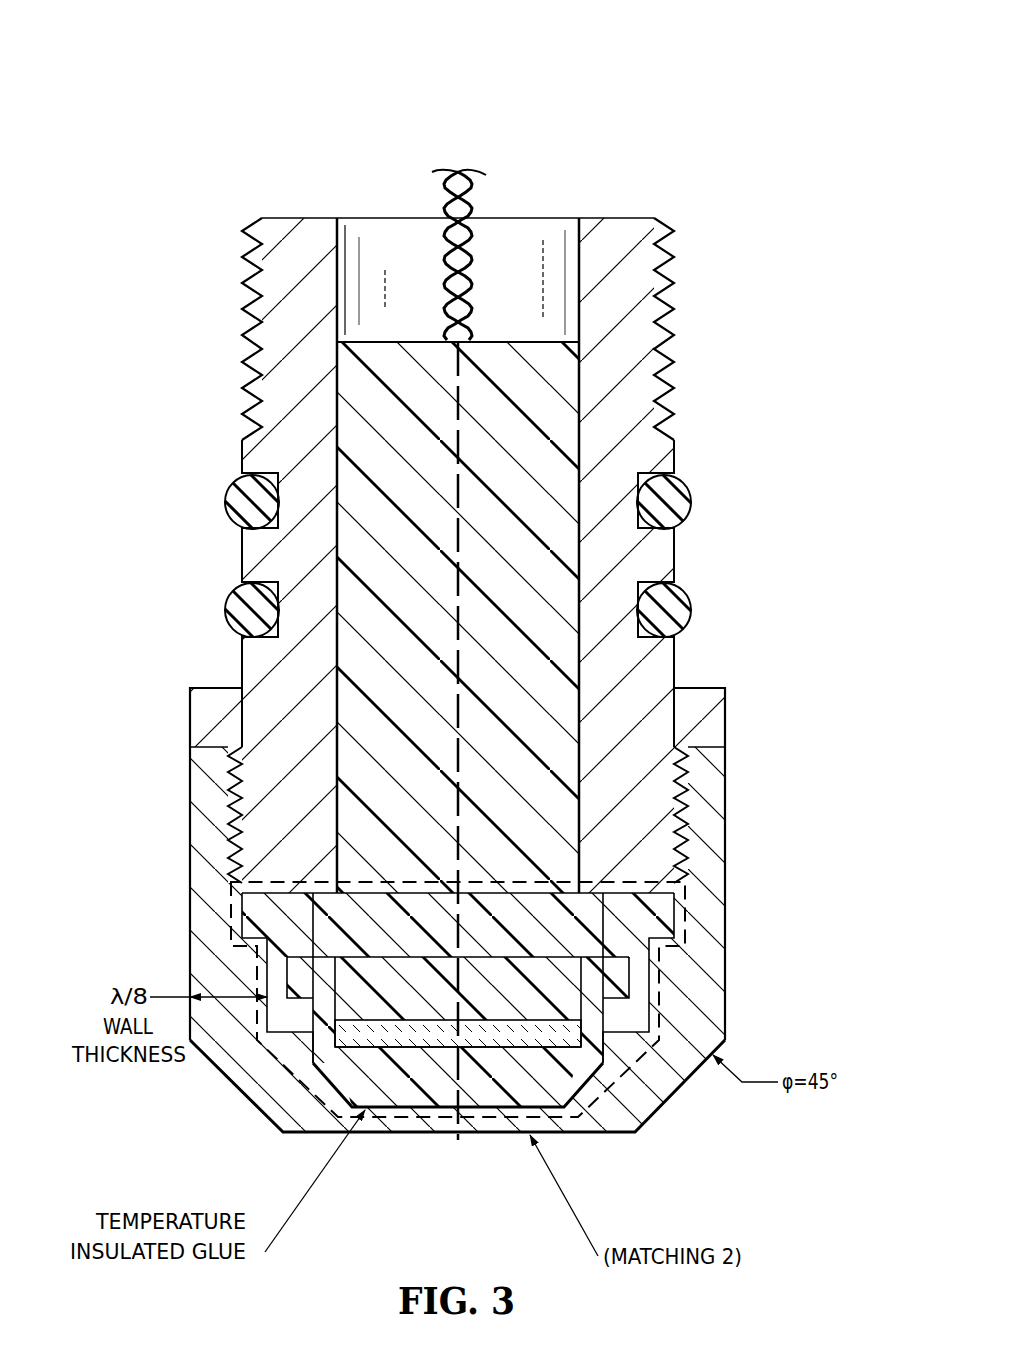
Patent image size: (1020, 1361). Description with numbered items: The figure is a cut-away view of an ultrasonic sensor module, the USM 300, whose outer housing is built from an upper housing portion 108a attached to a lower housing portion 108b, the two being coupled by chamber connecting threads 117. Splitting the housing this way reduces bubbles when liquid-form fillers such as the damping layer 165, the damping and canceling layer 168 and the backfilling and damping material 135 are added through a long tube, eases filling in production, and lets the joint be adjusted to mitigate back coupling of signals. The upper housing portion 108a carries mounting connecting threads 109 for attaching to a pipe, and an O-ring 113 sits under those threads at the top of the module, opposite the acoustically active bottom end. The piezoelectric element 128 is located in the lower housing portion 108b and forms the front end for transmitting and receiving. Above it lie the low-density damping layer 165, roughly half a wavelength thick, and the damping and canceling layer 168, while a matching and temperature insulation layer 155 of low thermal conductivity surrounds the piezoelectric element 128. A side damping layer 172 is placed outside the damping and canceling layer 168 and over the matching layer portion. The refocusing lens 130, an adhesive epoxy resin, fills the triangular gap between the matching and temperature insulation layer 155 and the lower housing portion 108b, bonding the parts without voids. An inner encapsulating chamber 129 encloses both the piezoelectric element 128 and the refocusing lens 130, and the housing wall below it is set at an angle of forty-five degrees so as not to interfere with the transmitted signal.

The USM 300 is at (196, 96).
The backfilling and damping material 135 is at (410, 440).
The upper housing portion 108a is at (623, 222).
The mounting connecting threads 109 is at (238, 270).
The O-ring 113 is at (690, 508).
The chamber connecting threads 117 is at (238, 797).
The lower housing portion 108b is at (190, 822).
The damping layer 165 is at (383, 987).
The damping and canceling layer 168 is at (497, 900).
The side damping layer 172 is at (663, 950).
The encapsulating chamber 129 is at (232, 912).
The refocusing lens 130 is at (305, 1050).
The piezoelectric element 128 is at (438, 1043).
The matching and temperature insulation layer 155 is at (600, 1045).